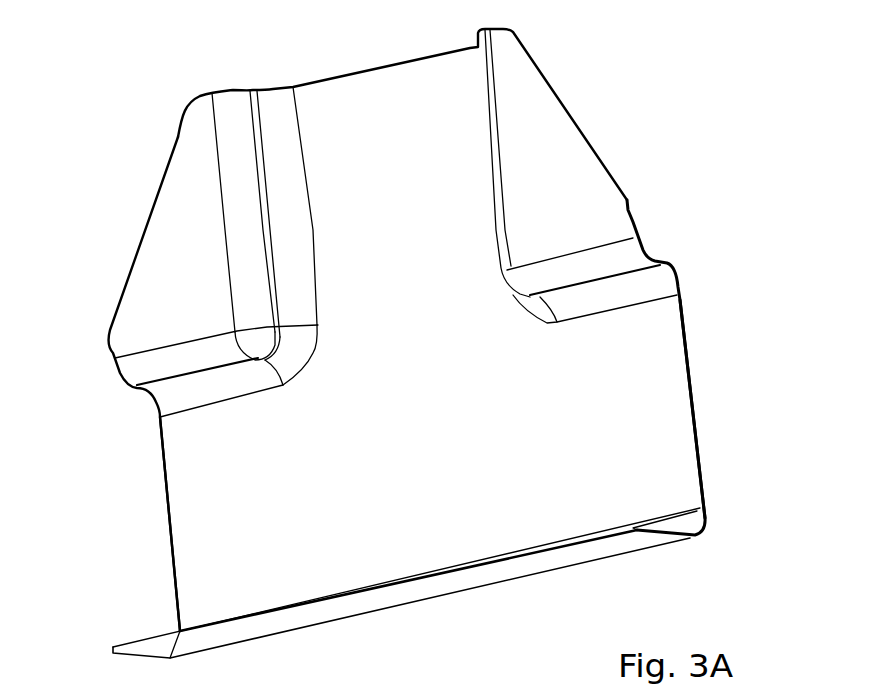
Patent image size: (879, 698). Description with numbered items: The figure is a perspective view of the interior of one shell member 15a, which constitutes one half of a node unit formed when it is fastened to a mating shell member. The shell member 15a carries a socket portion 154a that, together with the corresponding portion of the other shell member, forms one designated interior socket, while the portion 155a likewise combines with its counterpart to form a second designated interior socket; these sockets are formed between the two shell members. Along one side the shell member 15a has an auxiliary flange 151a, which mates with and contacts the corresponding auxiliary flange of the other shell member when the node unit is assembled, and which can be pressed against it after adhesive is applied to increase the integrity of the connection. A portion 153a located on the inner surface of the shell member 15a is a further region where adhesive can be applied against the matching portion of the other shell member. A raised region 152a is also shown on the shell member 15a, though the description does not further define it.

The shell member 15a is at (411, 330).
The auxiliary flange 151a is at (560, 208).
The left raised block 152a is at (180, 313).
The portion 153a is at (670, 512).
The socket portion 154a is at (363, 107).
The socket portion 155a is at (658, 422).